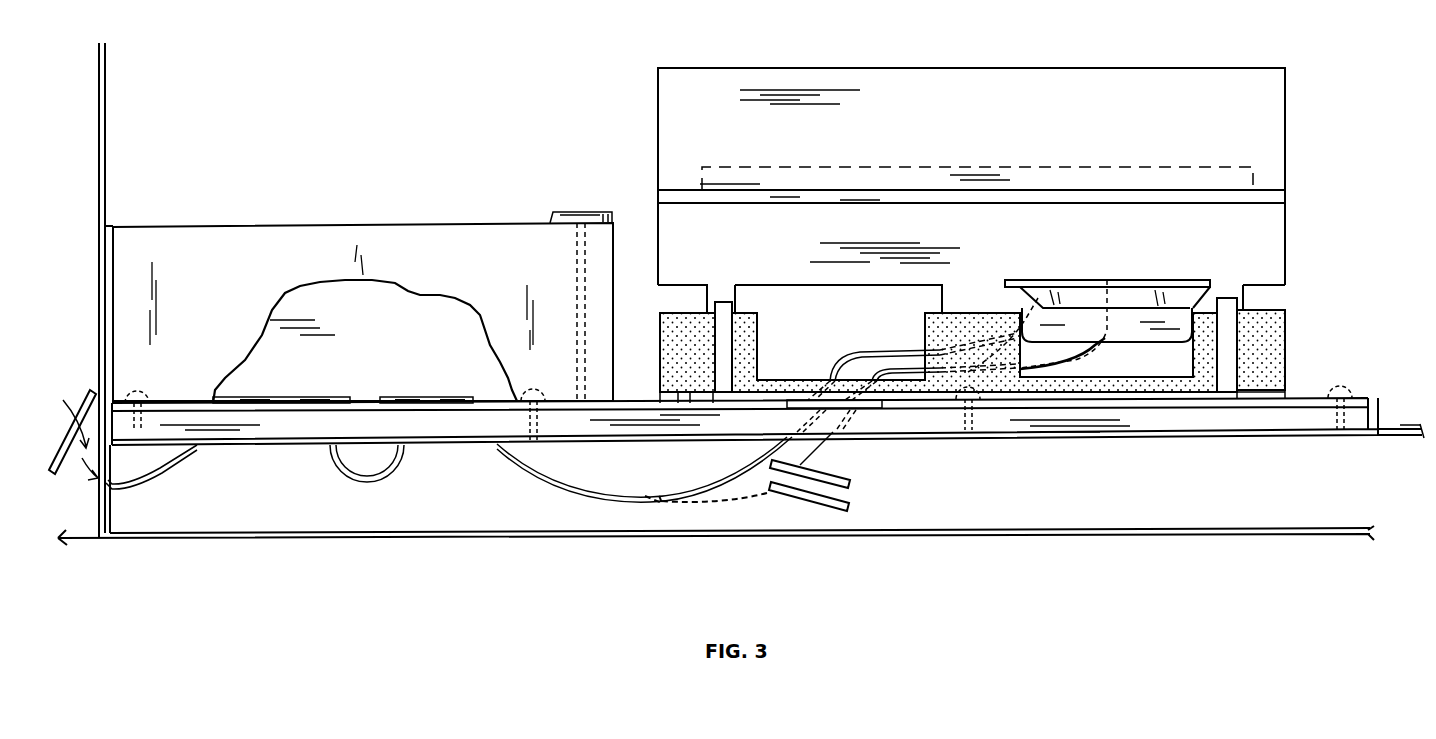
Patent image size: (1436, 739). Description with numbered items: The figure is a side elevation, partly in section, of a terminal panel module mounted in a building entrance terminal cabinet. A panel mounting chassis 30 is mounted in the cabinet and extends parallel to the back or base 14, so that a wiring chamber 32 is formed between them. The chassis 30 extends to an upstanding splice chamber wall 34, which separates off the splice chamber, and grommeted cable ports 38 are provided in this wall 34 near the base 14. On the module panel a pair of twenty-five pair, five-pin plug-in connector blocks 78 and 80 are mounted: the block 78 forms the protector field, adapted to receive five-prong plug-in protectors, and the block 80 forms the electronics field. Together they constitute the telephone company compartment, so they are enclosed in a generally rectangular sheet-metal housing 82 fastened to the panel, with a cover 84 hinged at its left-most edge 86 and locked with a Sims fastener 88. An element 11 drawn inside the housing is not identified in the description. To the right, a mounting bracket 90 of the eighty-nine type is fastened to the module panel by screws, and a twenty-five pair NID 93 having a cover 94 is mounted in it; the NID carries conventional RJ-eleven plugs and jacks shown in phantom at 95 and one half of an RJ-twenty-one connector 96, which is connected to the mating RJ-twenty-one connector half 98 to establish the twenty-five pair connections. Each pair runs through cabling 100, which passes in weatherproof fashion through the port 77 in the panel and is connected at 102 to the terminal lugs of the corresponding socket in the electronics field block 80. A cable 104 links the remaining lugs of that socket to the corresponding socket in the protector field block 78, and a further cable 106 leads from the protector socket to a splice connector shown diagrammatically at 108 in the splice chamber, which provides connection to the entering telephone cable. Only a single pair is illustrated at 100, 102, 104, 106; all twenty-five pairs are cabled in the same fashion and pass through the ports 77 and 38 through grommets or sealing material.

The workpiece 11 is at (397, 286).
The back or base 14 is at (474, 540).
The panel mounting chassis 30 is at (1391, 428).
The wiring chamber 32 is at (624, 517).
The splice chamber wall 34 is at (106, 96).
The grommeted cable ports 38 is at (100, 497).
The port 77 is at (801, 399).
The plug in connector block 78 is at (265, 399).
The plug in connector block 80 is at (414, 399).
The housing 82 is at (104, 298).
The cover 84 is at (250, 226).
The left-most edge 86 is at (103, 225).
The Sims fastener 88 is at (572, 212).
The mounting bracket 90 is at (1286, 346).
The NID 93 is at (1287, 220).
The cover 94 is at (1095, 68).
The RJ11 plugs and jacks 95 is at (1100, 166).
The RJ21 connector half 96 is at (1052, 294).
The mating RJ21 connector half 98 is at (1131, 320).
The cabling 100 is at (891, 356).
The cable 102 is at (510, 450).
The cable 104 is at (340, 468).
The cable 106 is at (180, 471).
The splice connector 108 is at (78, 410).